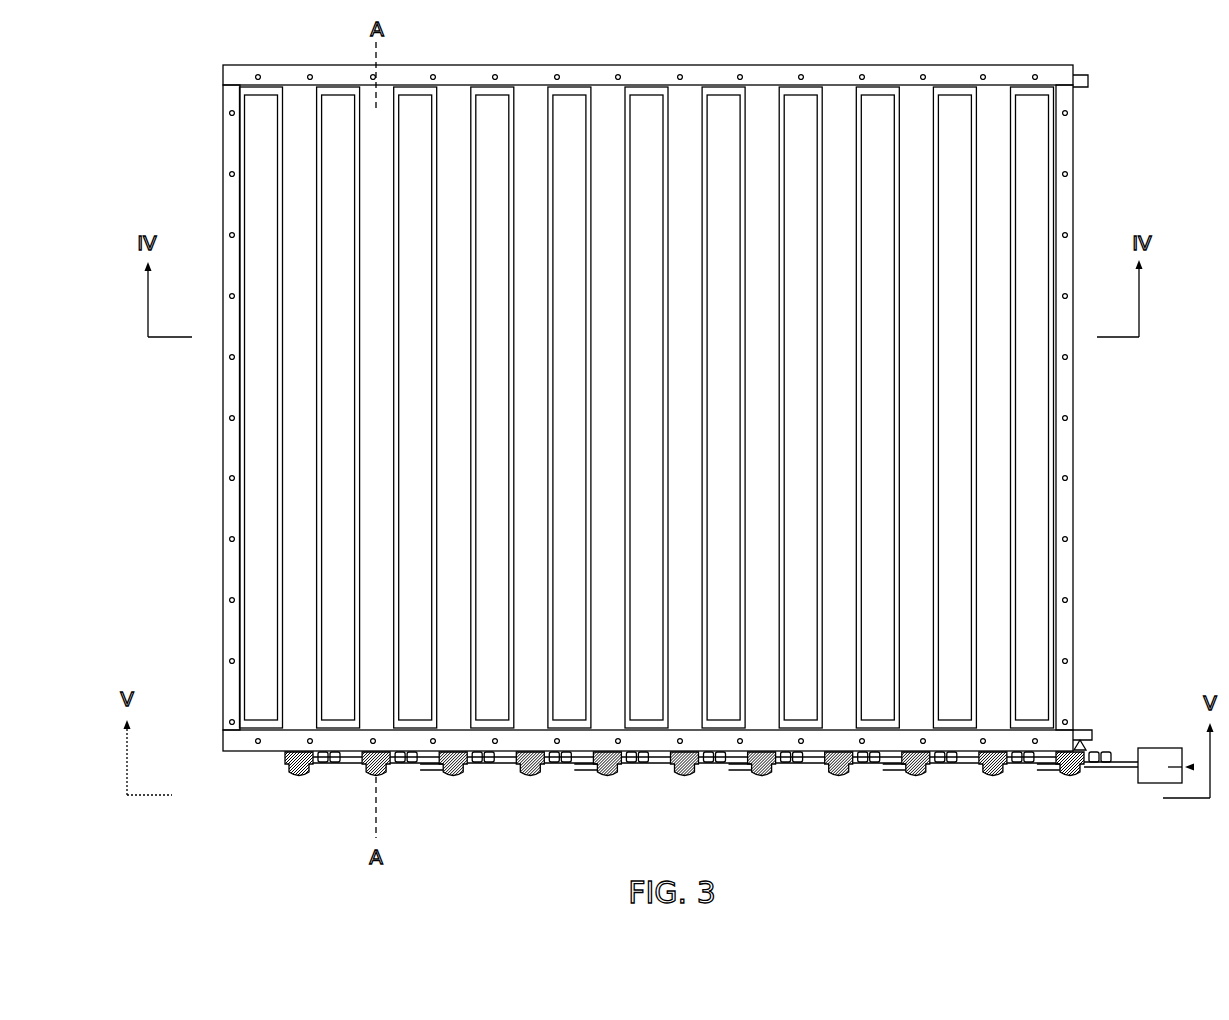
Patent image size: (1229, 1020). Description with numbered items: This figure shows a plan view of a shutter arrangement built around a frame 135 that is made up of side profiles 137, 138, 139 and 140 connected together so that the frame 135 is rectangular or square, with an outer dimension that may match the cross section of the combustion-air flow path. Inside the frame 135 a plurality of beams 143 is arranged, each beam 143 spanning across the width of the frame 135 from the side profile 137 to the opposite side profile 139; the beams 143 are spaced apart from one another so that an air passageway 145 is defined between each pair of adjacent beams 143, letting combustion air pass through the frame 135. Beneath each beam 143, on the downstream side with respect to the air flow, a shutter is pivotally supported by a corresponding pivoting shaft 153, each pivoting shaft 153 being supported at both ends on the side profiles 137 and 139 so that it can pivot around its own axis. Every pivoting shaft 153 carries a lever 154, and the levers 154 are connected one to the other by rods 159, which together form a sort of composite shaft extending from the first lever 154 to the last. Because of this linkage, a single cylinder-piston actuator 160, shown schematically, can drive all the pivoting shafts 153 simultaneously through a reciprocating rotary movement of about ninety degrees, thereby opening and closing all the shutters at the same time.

The frame 135 is at (190, 168).
The side profile 137 is at (522, 77).
The side profile 138 is at (1066, 450).
The side profile 139 is at (737, 752).
The side profile 140 is at (230, 447).
The beam 143 is at (337, 670).
The air passageway 145 is at (372, 590).
The pivoting shaft 153 is at (300, 780).
The lever 154 is at (322, 765).
The rod 159 is at (510, 770).
The cylinder-piston actuator 160 is at (1148, 783).